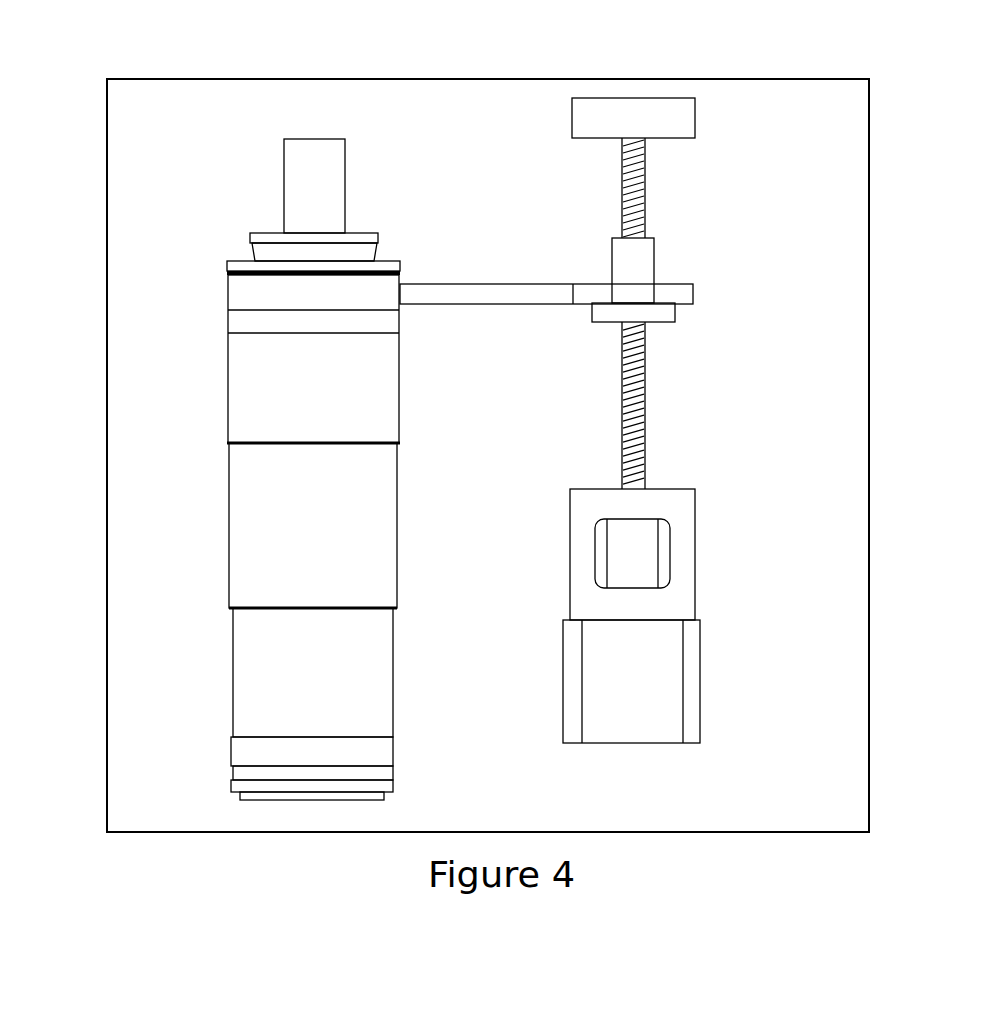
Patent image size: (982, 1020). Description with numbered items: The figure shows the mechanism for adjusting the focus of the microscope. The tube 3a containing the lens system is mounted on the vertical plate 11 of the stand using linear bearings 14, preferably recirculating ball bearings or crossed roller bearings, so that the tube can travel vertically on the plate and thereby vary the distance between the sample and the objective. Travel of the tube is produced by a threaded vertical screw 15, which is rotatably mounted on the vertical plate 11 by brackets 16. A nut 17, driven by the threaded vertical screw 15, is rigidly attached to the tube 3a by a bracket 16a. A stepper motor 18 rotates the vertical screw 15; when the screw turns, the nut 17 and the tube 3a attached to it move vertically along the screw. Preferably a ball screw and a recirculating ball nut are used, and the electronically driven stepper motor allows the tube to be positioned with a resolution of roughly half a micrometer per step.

The vertical plate 11 is at (838, 506).
The linear bearings 14 is at (291, 181).
The tube 3a is at (248, 369).
The bracket 16a is at (500, 296).
The brackets 16 is at (684, 122).
The nut 17 is at (642, 297).
The threaded vertical screw 15 is at (645, 437).
The stepper motor 18 is at (680, 594).